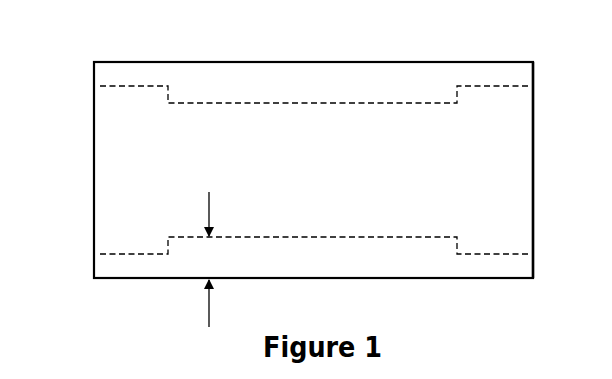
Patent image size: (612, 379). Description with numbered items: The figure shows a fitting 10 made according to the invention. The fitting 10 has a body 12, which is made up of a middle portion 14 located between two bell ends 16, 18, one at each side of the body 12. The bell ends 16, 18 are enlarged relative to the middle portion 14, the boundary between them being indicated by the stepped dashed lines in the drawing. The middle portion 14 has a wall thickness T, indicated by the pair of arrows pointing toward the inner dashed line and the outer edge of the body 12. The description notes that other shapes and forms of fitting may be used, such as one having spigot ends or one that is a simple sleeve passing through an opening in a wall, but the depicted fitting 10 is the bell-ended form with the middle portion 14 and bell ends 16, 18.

The fitting 10 is at (394, 46).
The body 12 is at (93, 157).
The middle portion 14 is at (305, 62).
The bell end 16 is at (125, 72).
The bell end 18 is at (511, 70).
The wall thickness T is at (219, 249).